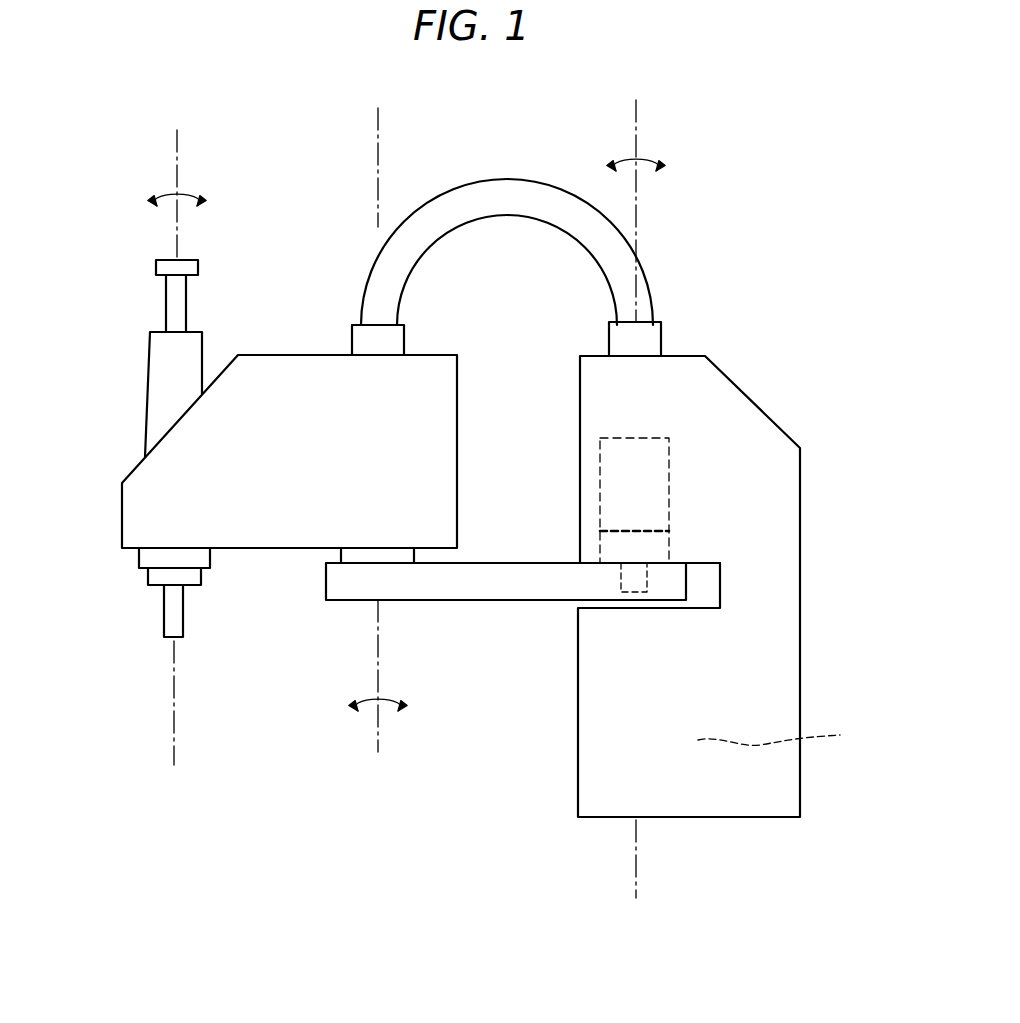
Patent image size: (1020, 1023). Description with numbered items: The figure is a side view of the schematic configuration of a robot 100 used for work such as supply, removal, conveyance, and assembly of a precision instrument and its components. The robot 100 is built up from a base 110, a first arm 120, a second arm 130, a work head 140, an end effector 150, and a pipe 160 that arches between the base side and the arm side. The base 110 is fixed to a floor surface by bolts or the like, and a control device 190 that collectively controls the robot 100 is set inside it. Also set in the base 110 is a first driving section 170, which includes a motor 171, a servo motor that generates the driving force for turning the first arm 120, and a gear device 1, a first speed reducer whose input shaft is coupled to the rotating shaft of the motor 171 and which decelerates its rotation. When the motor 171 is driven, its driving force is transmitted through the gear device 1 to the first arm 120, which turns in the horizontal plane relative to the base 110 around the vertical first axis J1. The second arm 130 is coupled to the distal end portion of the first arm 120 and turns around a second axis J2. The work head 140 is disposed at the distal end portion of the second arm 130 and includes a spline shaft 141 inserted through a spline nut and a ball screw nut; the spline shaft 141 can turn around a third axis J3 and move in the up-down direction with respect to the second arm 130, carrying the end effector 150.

The robot 100 is at (698, 145).
The base 110 is at (801, 682).
The first arm 120 is at (443, 600).
The second arm 130 is at (458, 392).
The work head 140 is at (148, 375).
The spline shaft 141 is at (175, 299).
The end effector 150 is at (165, 615).
The pipe 160 is at (482, 190).
The first driving section 170 is at (598, 440).
The motor 171 is at (598, 485).
The gear device 1 is at (598, 548).
The control device 190 is at (790, 731).
The first axis J1 is at (636, 125).
The second axis J2 is at (377, 728).
The third axis J3 is at (178, 152).